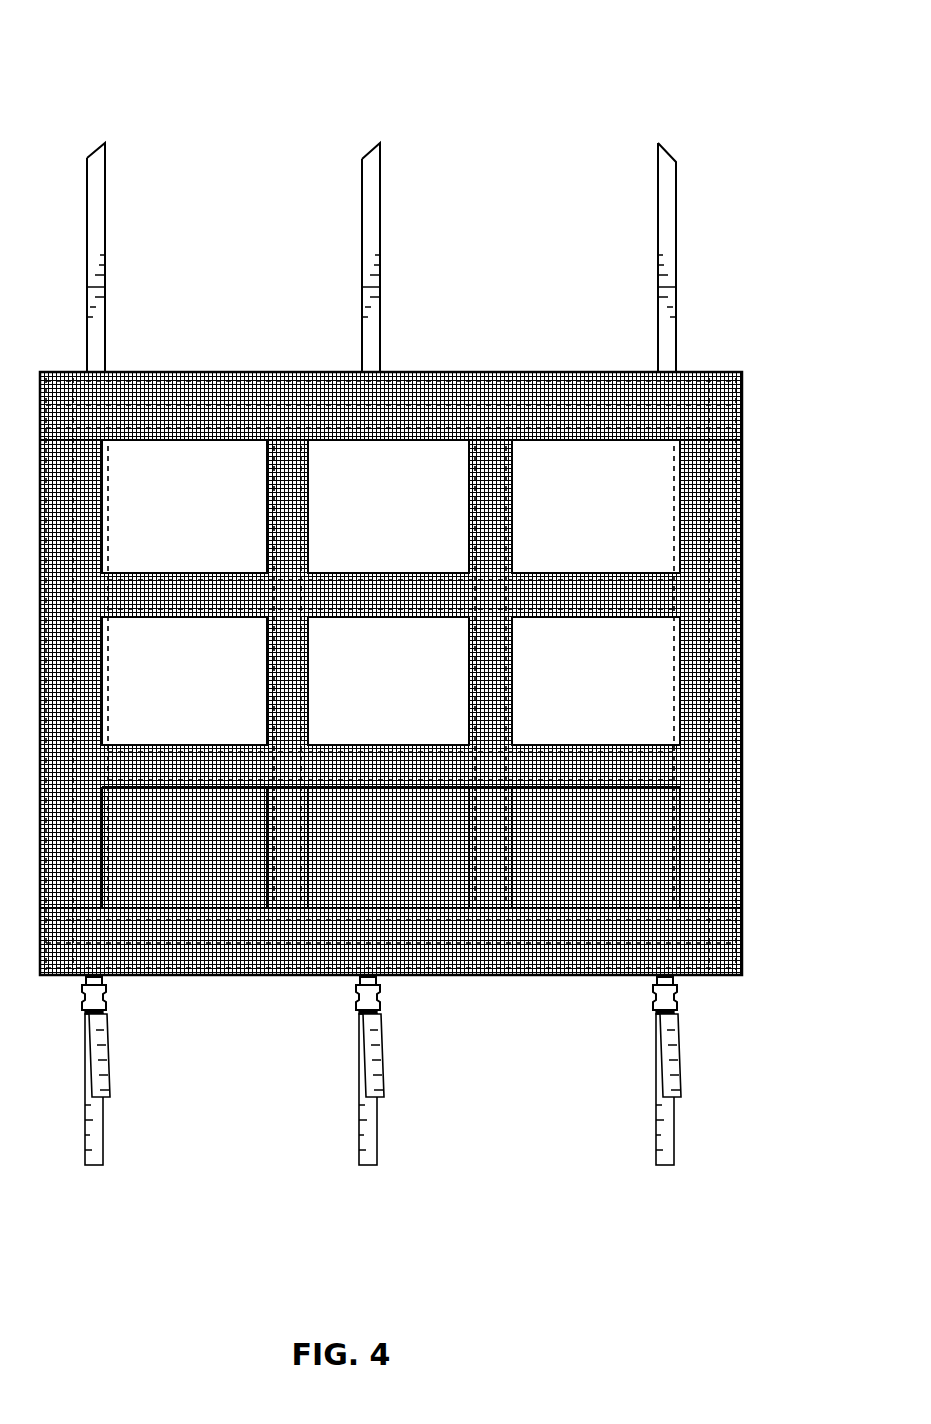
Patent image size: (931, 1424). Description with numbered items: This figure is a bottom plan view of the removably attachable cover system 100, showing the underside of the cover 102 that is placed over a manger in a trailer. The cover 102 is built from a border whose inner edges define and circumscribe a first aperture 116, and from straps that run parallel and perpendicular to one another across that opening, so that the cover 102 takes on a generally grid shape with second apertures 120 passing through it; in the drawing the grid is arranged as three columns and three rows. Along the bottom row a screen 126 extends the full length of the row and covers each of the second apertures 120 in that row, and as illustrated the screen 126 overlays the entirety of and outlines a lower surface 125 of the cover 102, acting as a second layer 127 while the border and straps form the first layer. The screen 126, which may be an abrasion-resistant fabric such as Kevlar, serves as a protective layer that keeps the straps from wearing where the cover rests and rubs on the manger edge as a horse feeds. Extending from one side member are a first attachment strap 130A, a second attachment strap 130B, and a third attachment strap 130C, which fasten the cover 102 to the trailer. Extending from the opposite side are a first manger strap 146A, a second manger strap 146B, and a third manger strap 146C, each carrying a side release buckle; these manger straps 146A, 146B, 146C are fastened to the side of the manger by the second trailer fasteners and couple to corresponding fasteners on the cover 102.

The removably attachable cover system 100 is at (110, 33).
The cover 102 is at (84, 422).
The first aperture 116 is at (598, 498).
The second apertures 120 is at (634, 557).
The lower surface 125 is at (207, 932).
The screen 126 is at (555, 890).
The second layer 127 is at (104, 917).
The first attachment strap 130A is at (667, 207).
The second attachment strap 130B is at (372, 207).
The third attachment strap 130C is at (101, 207).
The first manger strap 146A is at (669, 1126).
The second manger strap 146B is at (374, 1126).
The third manger strap 146C is at (100, 1126).